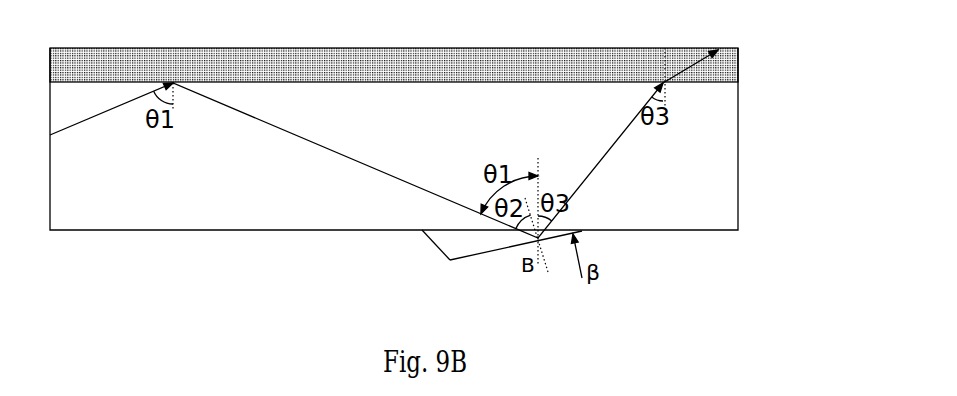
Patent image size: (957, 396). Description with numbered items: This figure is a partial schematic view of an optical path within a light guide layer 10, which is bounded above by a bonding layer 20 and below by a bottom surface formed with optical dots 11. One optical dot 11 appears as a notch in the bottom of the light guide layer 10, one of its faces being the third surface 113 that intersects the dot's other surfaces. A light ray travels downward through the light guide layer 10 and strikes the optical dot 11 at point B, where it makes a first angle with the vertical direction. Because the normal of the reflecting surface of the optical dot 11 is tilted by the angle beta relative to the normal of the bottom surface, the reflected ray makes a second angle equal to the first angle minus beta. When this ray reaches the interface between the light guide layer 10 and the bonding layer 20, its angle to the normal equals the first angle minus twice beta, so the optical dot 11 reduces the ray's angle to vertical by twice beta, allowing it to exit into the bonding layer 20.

The light guide layer 10 is at (740, 107).
The bonding layer 20 is at (740, 68).
The optical dot 11 is at (438, 248).
The third surface 113 is at (491, 253).